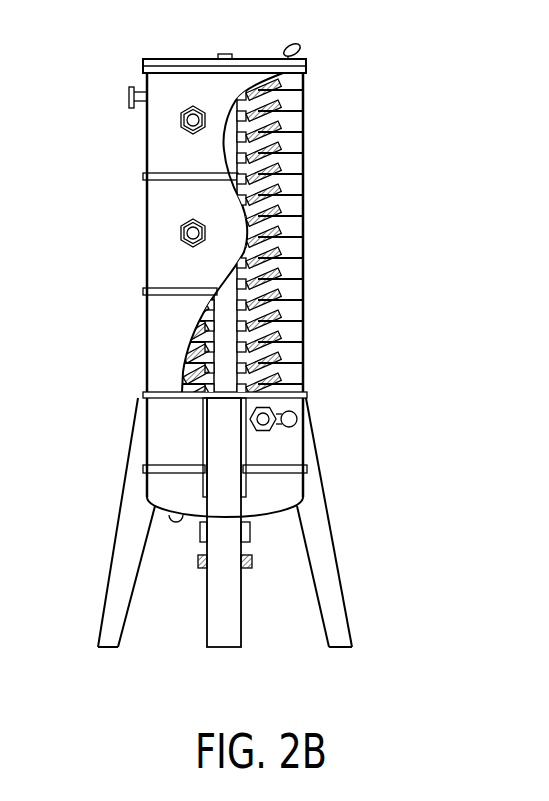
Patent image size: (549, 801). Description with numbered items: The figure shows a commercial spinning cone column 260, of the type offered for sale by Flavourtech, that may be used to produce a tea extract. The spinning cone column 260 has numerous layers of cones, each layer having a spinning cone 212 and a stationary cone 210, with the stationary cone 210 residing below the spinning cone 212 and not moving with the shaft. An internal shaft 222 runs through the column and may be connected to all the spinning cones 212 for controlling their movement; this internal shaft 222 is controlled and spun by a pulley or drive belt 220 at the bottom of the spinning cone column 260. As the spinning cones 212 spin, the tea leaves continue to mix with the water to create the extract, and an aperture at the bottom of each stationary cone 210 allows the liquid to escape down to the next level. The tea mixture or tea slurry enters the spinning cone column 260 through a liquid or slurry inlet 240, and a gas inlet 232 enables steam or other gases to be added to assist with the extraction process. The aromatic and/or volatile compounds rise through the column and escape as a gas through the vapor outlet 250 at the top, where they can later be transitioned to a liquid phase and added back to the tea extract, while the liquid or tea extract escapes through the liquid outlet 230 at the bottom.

The stationary cone 210 is at (305, 85).
The spinning cone 212 is at (288, 76).
The pulley or drive belt 220 is at (252, 562).
The internal shaft 222 is at (223, 335).
The liquid outlet 230 is at (176, 524).
The gas inlet 232 is at (297, 417).
The liquid or slurry inlet 240 is at (130, 100).
The vapor outlet 250 is at (300, 52).
The spinning cone column 260 is at (398, 597).